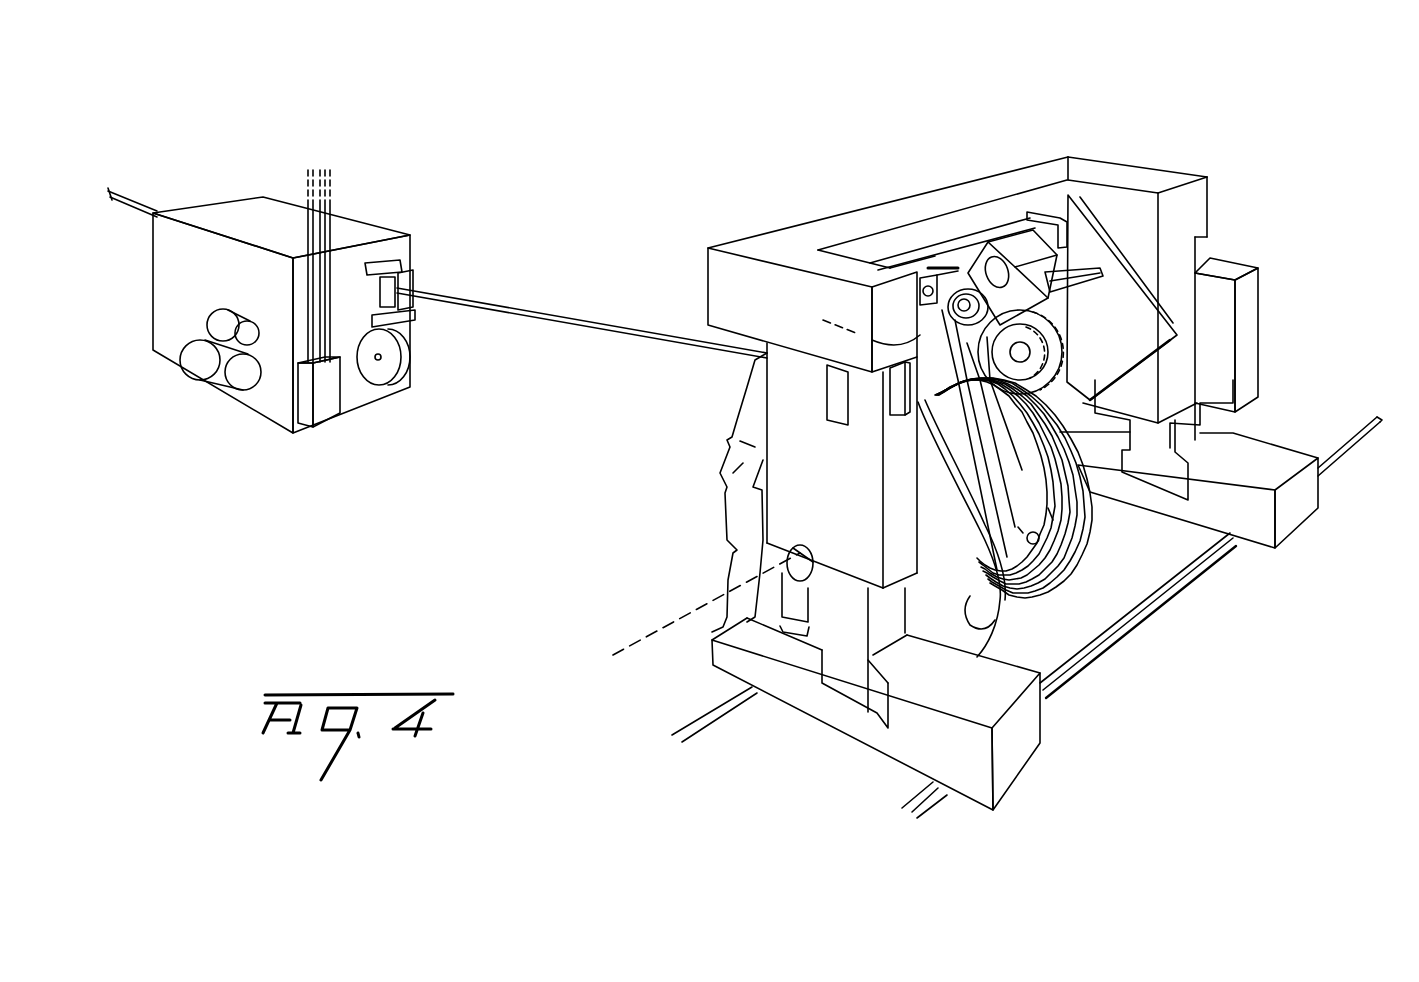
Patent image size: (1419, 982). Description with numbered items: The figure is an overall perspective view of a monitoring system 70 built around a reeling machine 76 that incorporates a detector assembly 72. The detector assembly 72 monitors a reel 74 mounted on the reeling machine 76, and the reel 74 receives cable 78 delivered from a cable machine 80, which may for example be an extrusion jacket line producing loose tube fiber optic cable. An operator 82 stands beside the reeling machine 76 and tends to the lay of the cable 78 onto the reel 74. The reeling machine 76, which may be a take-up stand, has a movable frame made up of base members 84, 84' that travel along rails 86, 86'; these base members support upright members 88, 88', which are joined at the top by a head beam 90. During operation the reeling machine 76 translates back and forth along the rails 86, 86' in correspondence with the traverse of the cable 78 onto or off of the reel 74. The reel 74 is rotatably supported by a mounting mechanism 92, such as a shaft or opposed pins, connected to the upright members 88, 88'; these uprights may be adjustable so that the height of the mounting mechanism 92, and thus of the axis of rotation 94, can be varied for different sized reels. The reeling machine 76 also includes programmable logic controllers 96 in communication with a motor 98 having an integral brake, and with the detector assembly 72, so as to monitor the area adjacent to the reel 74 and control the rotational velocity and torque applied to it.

The monitoring system 70 is at (463, 498).
The detector assembly 72 is at (935, 268).
The reel 74 is at (975, 600).
The reeling machine 76 is at (1223, 185).
The cable 78 is at (524, 322).
The cable machine 80 is at (371, 213).
The operator 82 is at (743, 435).
The base member 84 is at (906, 732).
The base member 84' is at (1214, 494).
The rail 86 is at (714, 732).
The rail 86' is at (1142, 646).
The upright member 88 is at (843, 698).
The upright member 88' is at (1258, 301).
The head beam 90 is at (912, 200).
The mounting mechanism 92 is at (793, 550).
The axis of rotation 94 is at (645, 637).
The programmable logic controllers 96 is at (800, 417).
The motor 98 is at (1085, 297).